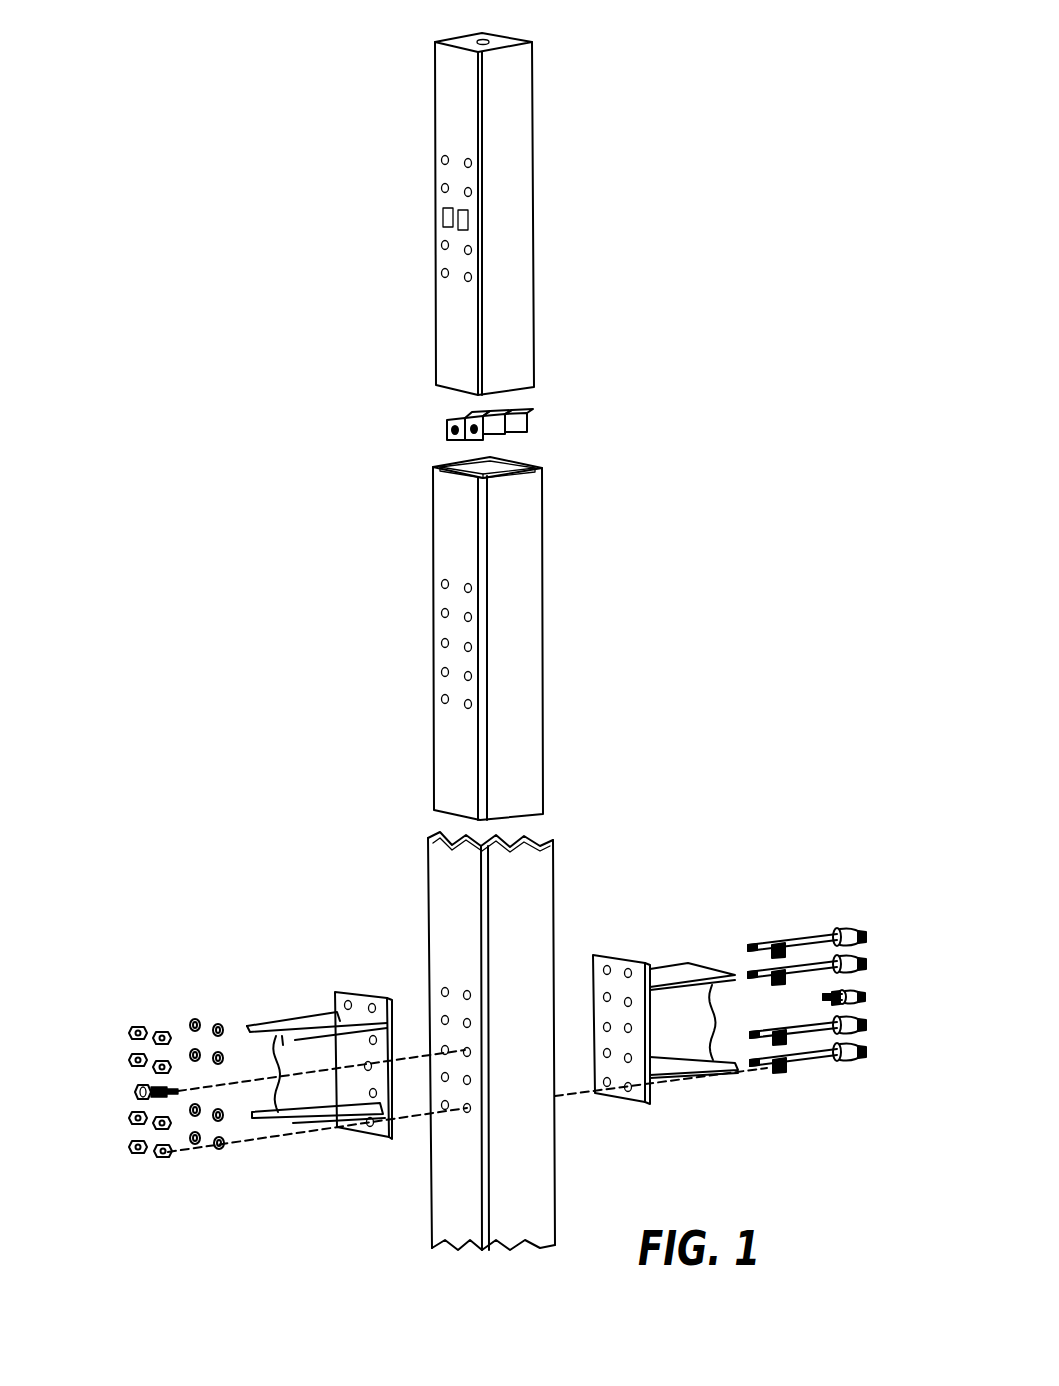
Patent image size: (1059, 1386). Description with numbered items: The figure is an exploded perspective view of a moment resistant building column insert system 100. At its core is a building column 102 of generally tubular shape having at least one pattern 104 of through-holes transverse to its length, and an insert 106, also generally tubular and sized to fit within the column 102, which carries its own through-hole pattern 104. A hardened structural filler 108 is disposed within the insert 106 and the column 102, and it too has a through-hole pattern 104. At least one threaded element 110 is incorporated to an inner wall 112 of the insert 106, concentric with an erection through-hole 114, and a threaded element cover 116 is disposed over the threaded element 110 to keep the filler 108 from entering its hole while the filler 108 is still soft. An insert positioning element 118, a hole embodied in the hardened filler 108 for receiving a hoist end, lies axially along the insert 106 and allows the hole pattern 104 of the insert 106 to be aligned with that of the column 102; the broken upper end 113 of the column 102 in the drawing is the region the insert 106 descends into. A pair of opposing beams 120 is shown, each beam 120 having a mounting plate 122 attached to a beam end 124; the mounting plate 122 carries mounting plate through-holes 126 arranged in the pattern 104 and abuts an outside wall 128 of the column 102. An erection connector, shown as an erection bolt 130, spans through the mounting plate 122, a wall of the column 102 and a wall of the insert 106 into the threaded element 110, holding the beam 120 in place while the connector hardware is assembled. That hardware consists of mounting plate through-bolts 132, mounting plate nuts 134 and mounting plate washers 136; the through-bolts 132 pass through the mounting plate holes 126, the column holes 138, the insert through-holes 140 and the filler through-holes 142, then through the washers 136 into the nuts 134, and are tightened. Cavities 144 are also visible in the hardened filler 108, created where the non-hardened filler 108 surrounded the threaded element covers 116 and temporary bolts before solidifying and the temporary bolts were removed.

The moment resistant building column insert system 100 is at (212, 138).
The building column 102 is at (503, 1021).
The pattern of through-holes 104 is at (492, 633).
The insert 106 is at (514, 822).
The hardened structural filler 108 is at (492, 558).
The threaded element 110 is at (447, 425).
The inner wall 112 is at (512, 460).
The top of lower pole section 113 is at (515, 828).
The erection through-hole 114 is at (288, 1178).
The threaded element cover 116 is at (495, 402).
The insert positioning element 118 is at (488, 40).
The beam 120 is at (316, 1025).
The mounting plate 122 is at (340, 1025).
The beam end 124 is at (357, 1010).
The mounting plate through-holes 126 is at (653, 1087).
The outside wall 128 is at (453, 1194).
The erection bolt 130 is at (140, 1093).
The mounting plate through-bolt 132 is at (810, 1067).
The mounting plate nut 134 is at (163, 1155).
The mounting plate washer 136 is at (220, 1148).
The column holes 138 is at (468, 1110).
The insert through-holes 140 is at (609, 675).
The filler through-holes 142 is at (470, 274).
The cavities 144 is at (470, 212).